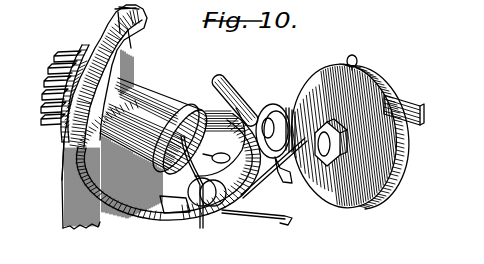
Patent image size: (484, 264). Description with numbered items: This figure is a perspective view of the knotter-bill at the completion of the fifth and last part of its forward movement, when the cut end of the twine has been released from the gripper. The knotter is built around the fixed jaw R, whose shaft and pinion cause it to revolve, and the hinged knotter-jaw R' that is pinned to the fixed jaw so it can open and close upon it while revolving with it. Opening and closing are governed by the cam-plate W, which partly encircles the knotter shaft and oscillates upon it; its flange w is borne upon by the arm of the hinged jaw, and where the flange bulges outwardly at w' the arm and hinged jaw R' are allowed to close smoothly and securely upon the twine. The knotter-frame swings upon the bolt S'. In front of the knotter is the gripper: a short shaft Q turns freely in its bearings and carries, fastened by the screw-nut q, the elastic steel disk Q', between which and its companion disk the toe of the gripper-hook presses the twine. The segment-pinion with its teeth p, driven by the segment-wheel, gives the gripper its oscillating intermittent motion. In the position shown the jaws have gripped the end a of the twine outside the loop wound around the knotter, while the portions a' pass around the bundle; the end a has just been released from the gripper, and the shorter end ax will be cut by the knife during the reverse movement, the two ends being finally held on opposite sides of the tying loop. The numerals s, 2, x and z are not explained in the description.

The cam-plate W is at (104, 117).
The outward bulge of flange w' is at (145, 53).
The flange of cam-plate w is at (72, 154).
The fixed jaw of knotter-bill R is at (82, 93).
The ratchet teeth s is at (59, 88).
The cylinder slot 2 is at (140, 112).
The hinged knotter-jaw R' is at (168, 160).
The bolt S' is at (216, 159).
The lever x is at (234, 100).
The teeth of segment-pinion p is at (275, 143).
The twine portions around bundle a' is at (203, 190).
The end of twine a is at (237, 189).
The cut end of twine ax is at (274, 170).
The circular disk Q' is at (346, 136).
The screw-nut q is at (325, 142).
The knob z is at (358, 62).
The short shaft Q is at (409, 109).